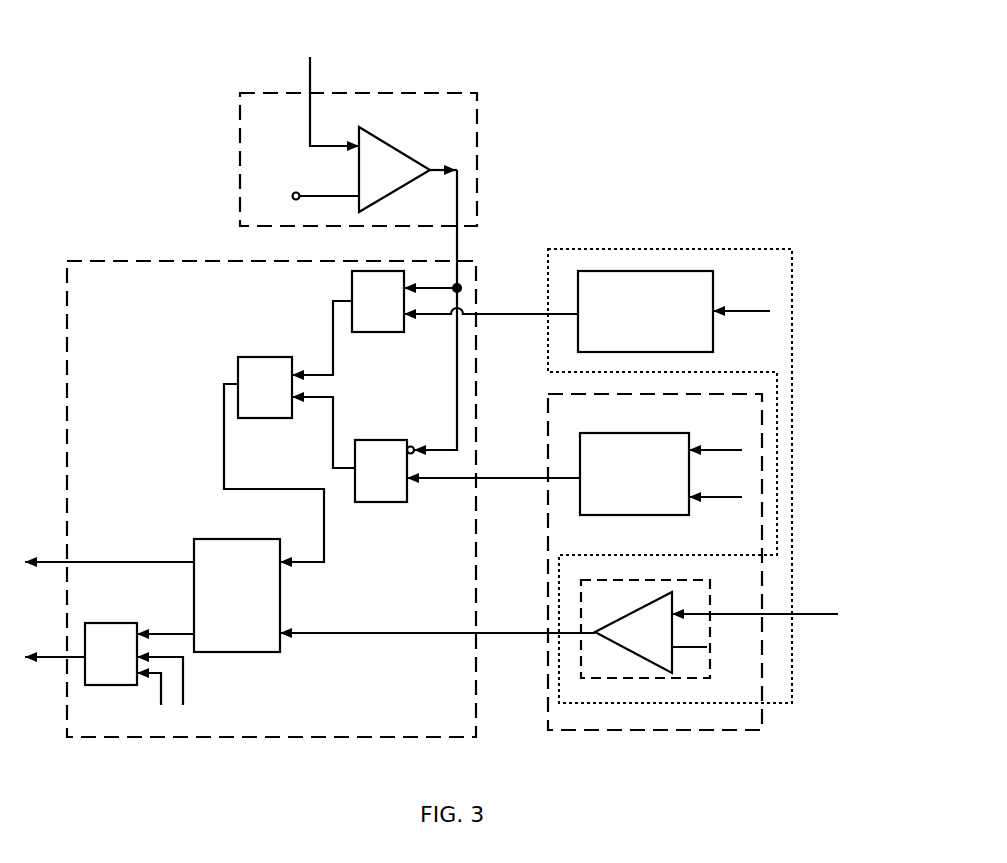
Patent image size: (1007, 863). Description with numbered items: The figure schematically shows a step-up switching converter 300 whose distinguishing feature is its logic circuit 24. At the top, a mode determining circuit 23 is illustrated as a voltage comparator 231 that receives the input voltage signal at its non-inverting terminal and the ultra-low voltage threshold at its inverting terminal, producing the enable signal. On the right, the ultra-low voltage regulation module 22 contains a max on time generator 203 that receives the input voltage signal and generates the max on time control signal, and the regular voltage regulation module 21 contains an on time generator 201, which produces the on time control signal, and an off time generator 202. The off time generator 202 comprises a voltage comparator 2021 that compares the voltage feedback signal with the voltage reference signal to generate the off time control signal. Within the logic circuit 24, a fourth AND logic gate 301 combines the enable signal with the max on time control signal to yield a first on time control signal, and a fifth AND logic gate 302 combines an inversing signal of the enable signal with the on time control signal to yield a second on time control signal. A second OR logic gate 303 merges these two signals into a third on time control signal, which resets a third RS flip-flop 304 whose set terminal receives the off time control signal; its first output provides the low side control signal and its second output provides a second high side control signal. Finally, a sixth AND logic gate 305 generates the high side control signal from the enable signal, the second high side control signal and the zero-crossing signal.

The step-up switching converter 300 is at (618, 60).
The mode determining circuit 23 is at (477, 117).
The voltage comparator 231 is at (394, 169).
The logic circuit 24 is at (301, 737).
The fourth AND logic gate 301 is at (390, 332).
The fifth AND logic gate 302 is at (398, 440).
The second OR logic gate 303 is at (270, 357).
The third RS flip-flop 304 is at (237, 539).
The sixth AND logic gate 305 is at (110, 623).
The ultra-low voltage regulation module 22 is at (792, 318).
The max on time generator 203 is at (713, 283).
The regular voltage regulation module 21 is at (665, 730).
The on time generator 201 is at (637, 515).
The off time generator 202 is at (672, 673).
The voltage comparator 2021 is at (633, 632).